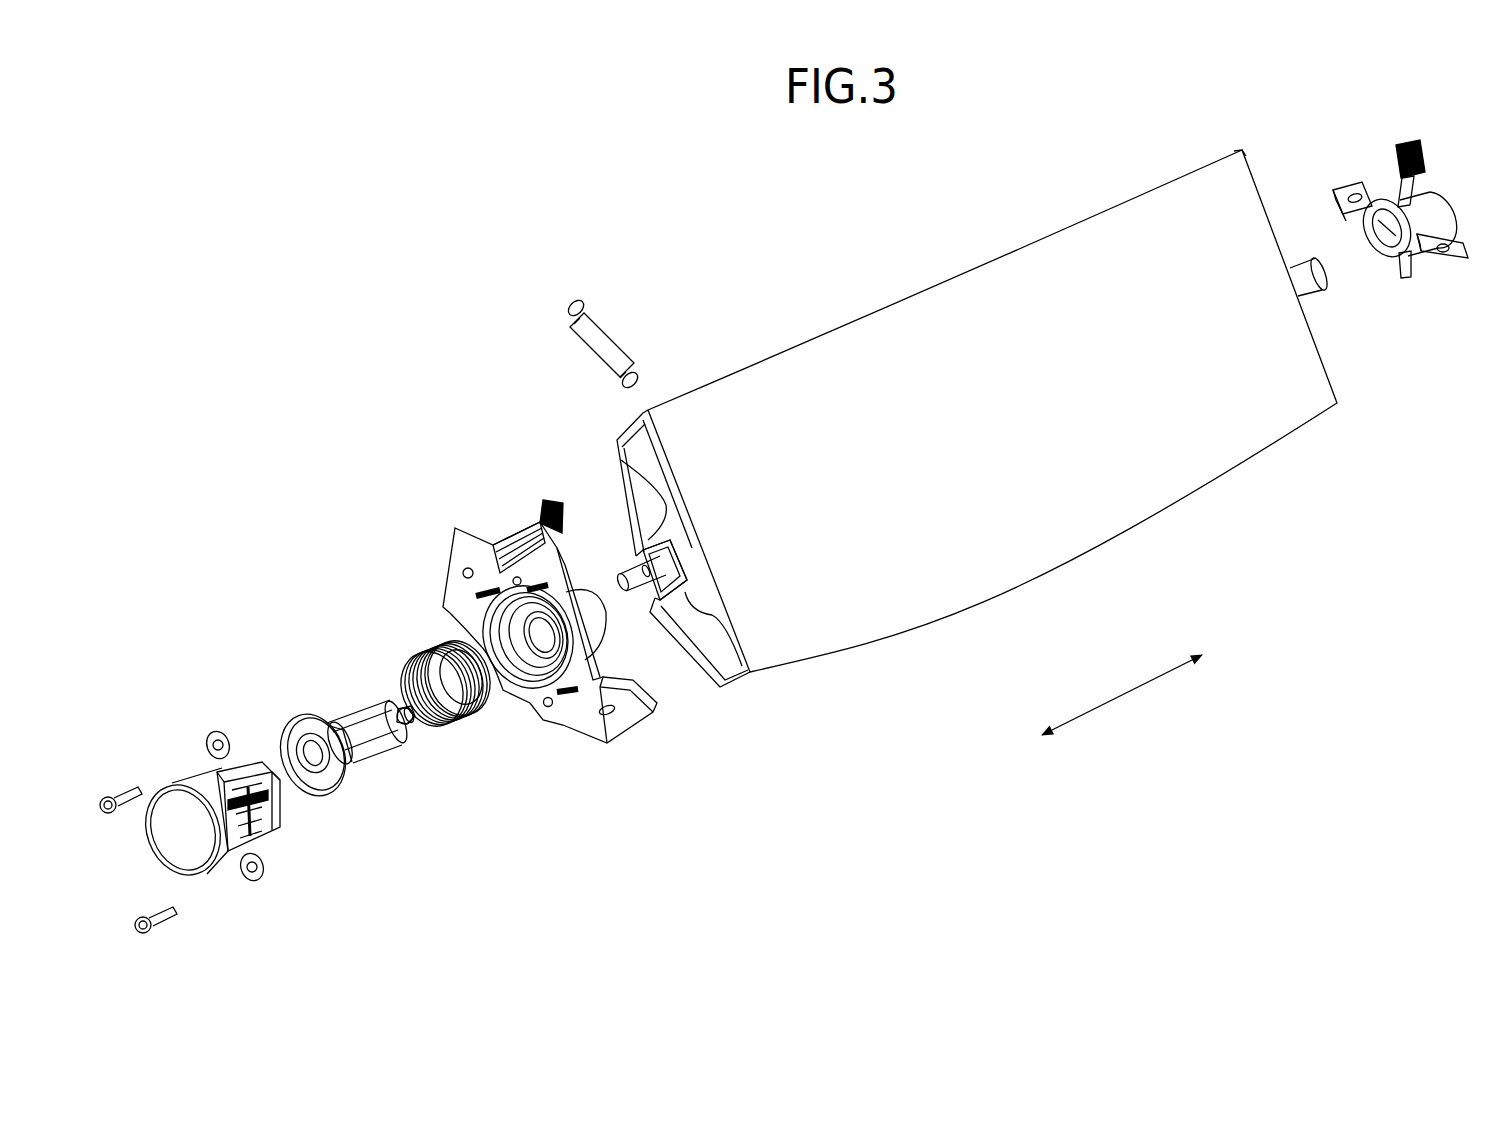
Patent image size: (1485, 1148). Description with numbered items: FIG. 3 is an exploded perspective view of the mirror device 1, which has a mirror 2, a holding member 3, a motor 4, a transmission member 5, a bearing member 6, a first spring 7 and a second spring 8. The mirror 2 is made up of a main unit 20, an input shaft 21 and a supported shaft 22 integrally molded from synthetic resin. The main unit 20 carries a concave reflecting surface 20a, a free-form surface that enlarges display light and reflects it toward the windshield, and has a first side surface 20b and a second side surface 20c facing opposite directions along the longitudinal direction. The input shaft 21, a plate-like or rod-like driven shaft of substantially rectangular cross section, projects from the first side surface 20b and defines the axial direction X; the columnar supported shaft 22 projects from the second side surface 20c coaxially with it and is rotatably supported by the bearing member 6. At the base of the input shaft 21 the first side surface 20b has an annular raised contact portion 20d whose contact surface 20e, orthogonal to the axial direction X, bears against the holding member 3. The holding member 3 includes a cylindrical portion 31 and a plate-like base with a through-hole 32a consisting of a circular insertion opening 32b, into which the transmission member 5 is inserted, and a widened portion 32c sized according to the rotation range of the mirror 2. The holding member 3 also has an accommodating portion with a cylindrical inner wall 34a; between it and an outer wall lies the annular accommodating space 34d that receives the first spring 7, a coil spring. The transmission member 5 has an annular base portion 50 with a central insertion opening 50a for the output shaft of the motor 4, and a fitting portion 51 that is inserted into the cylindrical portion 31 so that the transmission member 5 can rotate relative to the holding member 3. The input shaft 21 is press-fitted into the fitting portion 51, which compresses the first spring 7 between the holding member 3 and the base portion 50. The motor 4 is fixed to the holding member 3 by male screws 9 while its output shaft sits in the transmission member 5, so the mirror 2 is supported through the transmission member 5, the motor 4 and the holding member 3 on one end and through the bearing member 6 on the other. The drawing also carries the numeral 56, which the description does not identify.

The mirror device 1 is at (512, 233).
The mirror 2 is at (759, 286).
The holding member 3 is at (497, 518).
The motor 4 is at (187, 770).
The transmission member 5 is at (348, 705).
The bearing member 6 is at (1385, 193).
The first spring 7 is at (433, 643).
The second spring 8 is at (617, 333).
The male screws 9 is at (125, 790).
The main unit 20 is at (885, 310).
The reflecting surface 20a is at (1000, 352).
The first side surface 20b is at (620, 458).
The second side surface 20c is at (1312, 327).
The contact portion 20d is at (700, 588).
The contact surface 20e is at (649, 598).
The input shaft 21 is at (634, 560).
The supported shaft 22 is at (1303, 270).
The cylindrical portion 31 is at (601, 631).
The through-hole 32a is at (476, 820).
The insertion opening 32b is at (502, 671).
The widened portion 32c is at (561, 671).
The inner wall 34a is at (584, 598).
The accommodating space 34d is at (499, 624).
The base portion 50 is at (308, 705).
The insertion opening 50a is at (297, 742).
The fitting portion 51 is at (380, 707).
The shaft end 56 is at (393, 747).